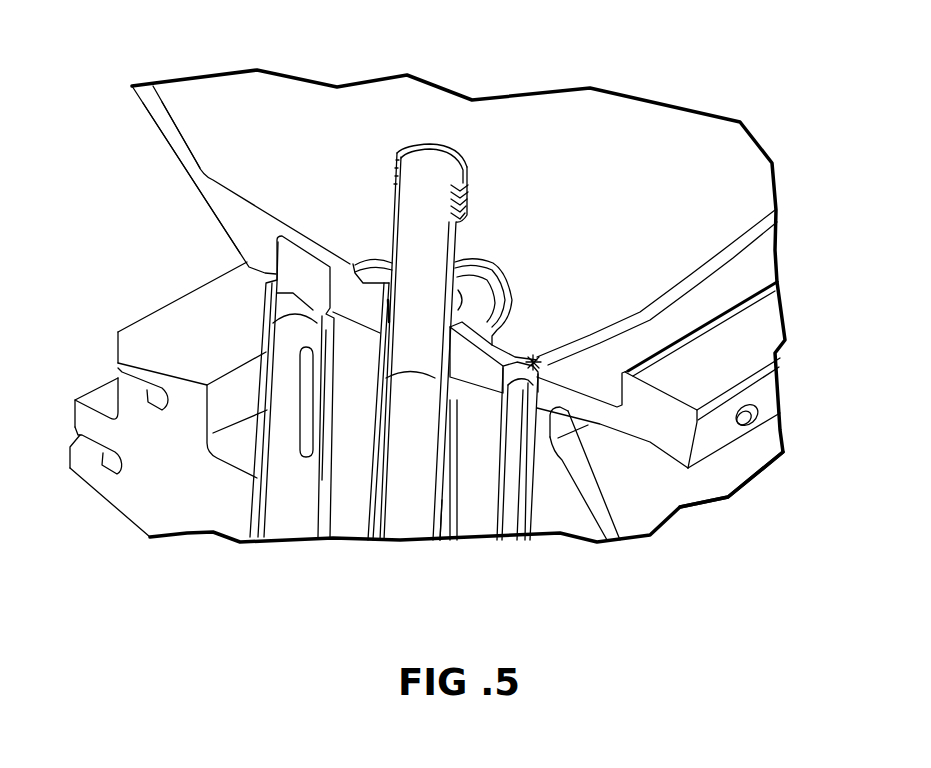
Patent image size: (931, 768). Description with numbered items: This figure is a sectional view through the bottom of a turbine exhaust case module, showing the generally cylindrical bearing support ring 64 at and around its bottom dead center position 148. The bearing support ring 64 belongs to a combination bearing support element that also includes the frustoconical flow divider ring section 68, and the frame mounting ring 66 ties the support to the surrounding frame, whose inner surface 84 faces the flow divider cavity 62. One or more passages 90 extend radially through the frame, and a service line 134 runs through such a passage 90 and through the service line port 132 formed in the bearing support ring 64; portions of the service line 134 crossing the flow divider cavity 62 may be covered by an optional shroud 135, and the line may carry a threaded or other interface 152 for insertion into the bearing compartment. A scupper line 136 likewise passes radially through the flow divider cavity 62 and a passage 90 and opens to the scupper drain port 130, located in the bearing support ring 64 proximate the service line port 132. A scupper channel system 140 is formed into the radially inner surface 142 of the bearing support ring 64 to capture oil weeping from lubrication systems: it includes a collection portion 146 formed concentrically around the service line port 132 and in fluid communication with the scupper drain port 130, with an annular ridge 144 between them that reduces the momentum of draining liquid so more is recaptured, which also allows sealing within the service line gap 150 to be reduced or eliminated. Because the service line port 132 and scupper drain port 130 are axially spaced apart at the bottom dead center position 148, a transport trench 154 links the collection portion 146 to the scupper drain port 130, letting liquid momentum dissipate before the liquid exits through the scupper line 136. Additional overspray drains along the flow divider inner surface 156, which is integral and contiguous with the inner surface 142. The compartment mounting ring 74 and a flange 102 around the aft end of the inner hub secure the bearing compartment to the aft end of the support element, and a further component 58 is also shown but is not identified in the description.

The holder body 58 is at (231, 504).
The flow divider cavity 62 is at (477, 495).
The bearing support ring 64 is at (711, 97).
The frame mounting ring 66 is at (686, 490).
The flow divider ring section 68 is at (118, 109).
The bearing compartment mounting flange 74 is at (638, 420).
The TEC frame inner surface 84 is at (363, 479).
The strut radial passage 90 is at (342, 517).
The flange 102 is at (713, 376).
The scupper drain port 130 is at (538, 360).
The service line port 132 is at (387, 328).
The service line 134 is at (368, 219).
The service line shroud 135 is at (445, 521).
The scupper line 136 is at (512, 514).
The scupper channel system 140 is at (526, 292).
The bearing support ring inner surface 142 is at (660, 196).
The ridge 144 is at (480, 300).
The collection portion 146 is at (498, 297).
The bottom dead center position 148 is at (234, 217).
The service line gap 150 is at (462, 305).
The service line interface 152 is at (470, 186).
The scupper trench 154 is at (522, 346).
The flow divider inner surface 156 is at (236, 128).